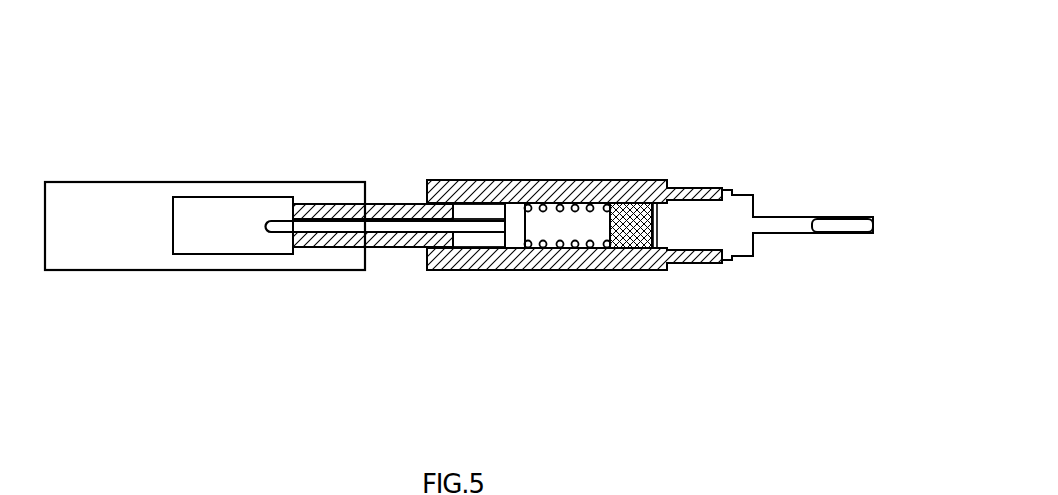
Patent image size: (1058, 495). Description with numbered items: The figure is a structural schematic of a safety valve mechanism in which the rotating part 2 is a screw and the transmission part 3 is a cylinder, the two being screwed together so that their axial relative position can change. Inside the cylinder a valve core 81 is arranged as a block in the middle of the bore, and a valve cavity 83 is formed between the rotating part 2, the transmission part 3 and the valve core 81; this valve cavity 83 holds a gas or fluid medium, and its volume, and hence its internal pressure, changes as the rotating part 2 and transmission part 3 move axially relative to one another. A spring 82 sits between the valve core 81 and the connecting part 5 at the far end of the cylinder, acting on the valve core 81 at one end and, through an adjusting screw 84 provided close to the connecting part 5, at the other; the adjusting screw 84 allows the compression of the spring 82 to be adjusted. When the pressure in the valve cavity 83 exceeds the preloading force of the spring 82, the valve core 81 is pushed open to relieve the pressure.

The rotating part 2 is at (205, 187).
The transmission part 3 is at (503, 250).
The connecting part 5 is at (708, 217).
The valve core 81 is at (560, 203).
The spring 82 is at (512, 230).
The valve cavity 83 is at (467, 238).
The adjusting screw 84 is at (627, 230).